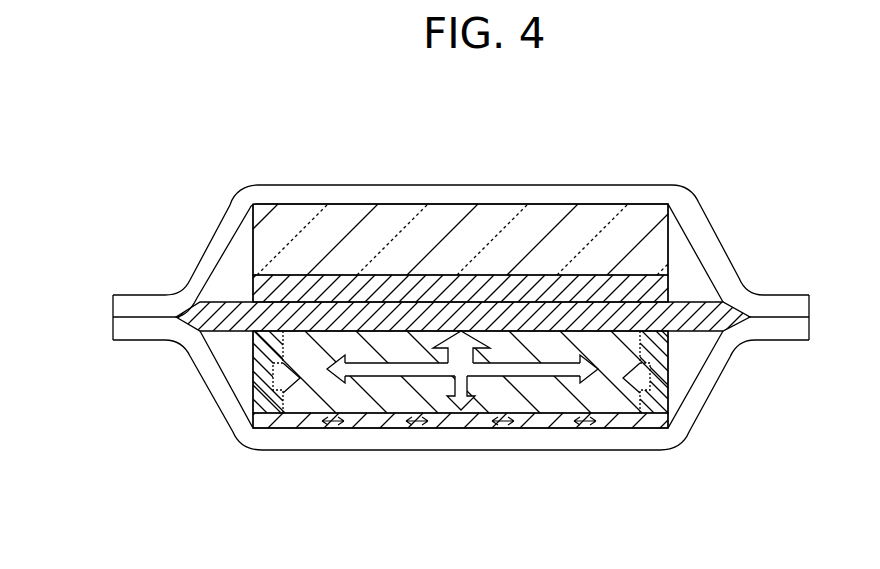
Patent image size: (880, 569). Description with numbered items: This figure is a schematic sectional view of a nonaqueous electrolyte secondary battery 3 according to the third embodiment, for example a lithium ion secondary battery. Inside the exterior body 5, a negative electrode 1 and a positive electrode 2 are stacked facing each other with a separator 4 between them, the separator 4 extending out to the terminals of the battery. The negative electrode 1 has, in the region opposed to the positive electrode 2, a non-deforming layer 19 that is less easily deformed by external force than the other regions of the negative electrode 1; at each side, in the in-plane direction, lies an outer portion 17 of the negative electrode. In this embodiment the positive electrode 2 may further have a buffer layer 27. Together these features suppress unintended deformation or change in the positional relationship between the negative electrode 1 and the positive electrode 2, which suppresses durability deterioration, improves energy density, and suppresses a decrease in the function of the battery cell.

The negative electrode 1 is at (538, 395).
The positive electrode 2 is at (427, 228).
The nonaqueous electrolyte secondary battery 3 is at (609, 130).
The separator 4 is at (698, 322).
The exterior body 5 is at (380, 441).
The outer portion of negative electrode in in-plane direction 17 is at (270, 408).
The non-deforming layer 19 is at (470, 424).
The buffer layer 27 is at (318, 290).